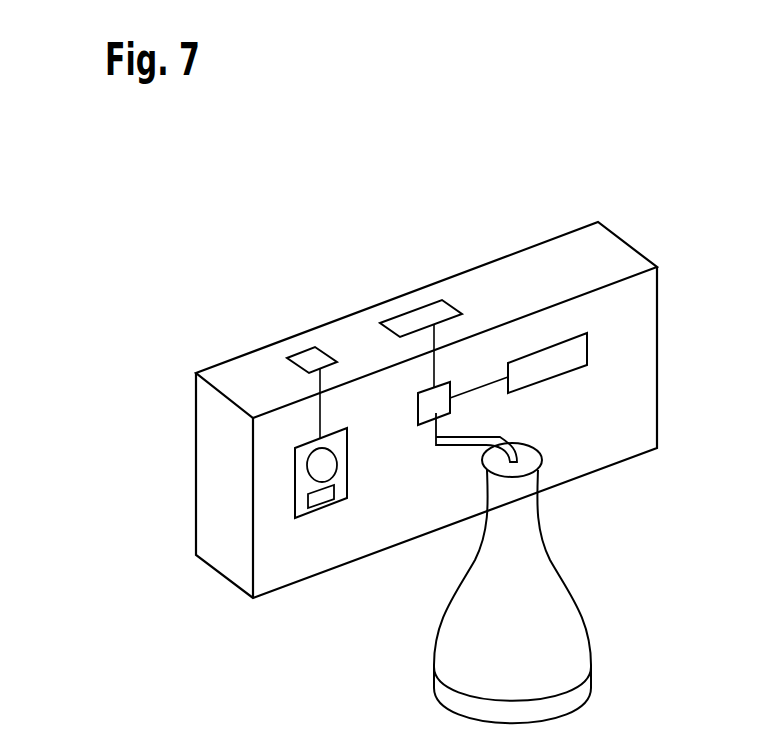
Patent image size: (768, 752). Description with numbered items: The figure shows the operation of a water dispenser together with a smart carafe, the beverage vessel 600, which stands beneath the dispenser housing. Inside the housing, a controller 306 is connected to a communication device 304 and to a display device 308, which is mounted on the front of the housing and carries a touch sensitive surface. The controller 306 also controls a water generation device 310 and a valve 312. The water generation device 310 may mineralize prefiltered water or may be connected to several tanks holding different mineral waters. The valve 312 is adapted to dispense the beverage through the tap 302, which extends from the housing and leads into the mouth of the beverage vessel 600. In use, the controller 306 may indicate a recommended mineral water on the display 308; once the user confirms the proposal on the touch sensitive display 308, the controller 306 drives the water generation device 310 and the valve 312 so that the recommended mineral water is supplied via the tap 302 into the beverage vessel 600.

The tap 302 is at (505, 430).
The communication device 304 is at (417, 316).
The controller 306 is at (305, 362).
The display device 308 is at (302, 508).
The water generation device 310 is at (563, 355).
The valve 312 is at (432, 405).
The beverage vessel 600 is at (620, 607).